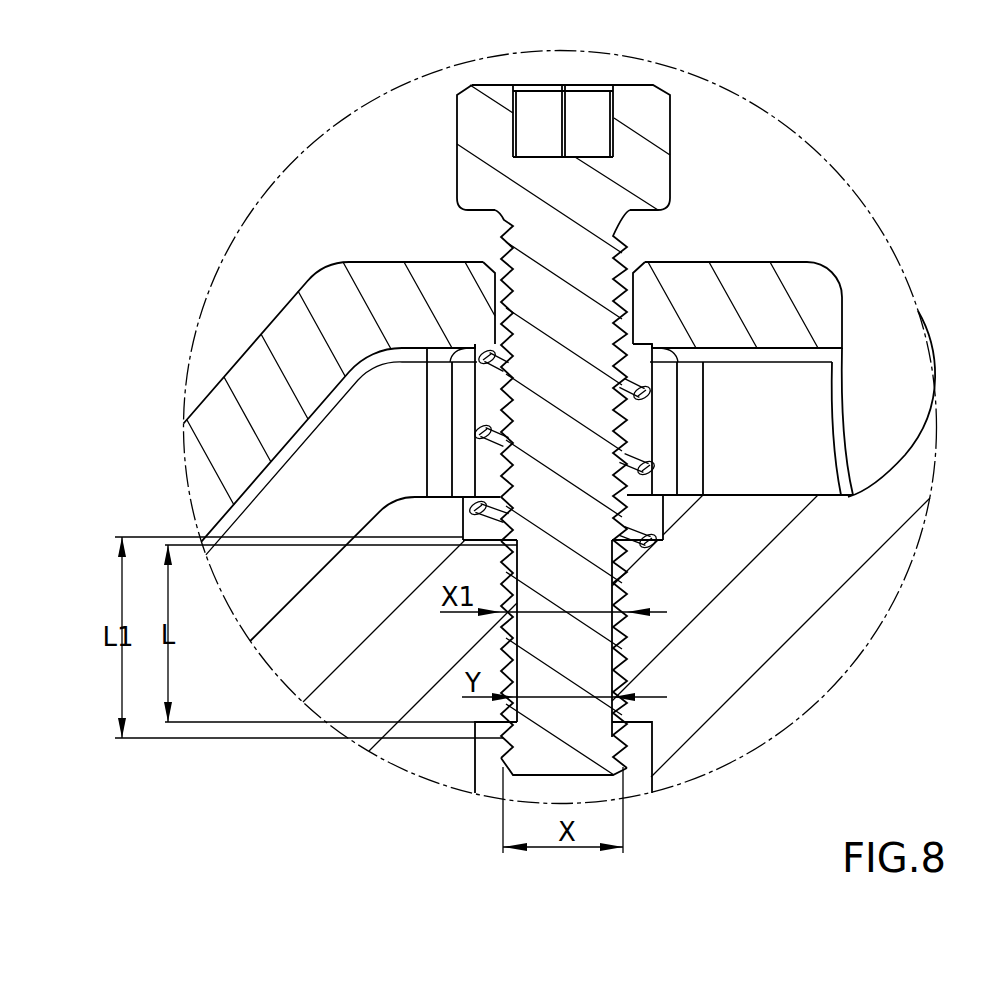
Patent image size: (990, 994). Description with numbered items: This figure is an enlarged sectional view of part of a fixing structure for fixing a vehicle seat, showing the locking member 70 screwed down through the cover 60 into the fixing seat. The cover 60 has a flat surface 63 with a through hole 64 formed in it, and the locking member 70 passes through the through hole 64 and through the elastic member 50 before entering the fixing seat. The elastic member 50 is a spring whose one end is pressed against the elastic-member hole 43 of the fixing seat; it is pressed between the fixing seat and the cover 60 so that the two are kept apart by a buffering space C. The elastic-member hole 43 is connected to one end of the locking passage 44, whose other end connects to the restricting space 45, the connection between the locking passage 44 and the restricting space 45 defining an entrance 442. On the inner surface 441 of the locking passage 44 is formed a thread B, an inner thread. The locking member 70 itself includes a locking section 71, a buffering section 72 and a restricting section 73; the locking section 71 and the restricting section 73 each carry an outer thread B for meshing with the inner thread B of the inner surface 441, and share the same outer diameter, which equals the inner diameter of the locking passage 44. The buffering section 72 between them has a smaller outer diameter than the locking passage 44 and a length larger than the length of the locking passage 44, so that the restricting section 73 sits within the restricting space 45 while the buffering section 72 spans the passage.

The locking member 70 is at (647, 170).
The locking section 71 is at (520, 228).
The buffering section 72 is at (513, 645).
The restricting section 73 is at (500, 745).
The cover 60 is at (822, 257).
The flat surface 63 is at (757, 273).
The through hole 64 is at (640, 262).
The elastic-member hole 43 is at (657, 515).
The elastic member 50 is at (480, 432).
The locking passage 44 is at (630, 560).
The inner surface 441 is at (672, 560).
The entrance 442 is at (620, 638).
The restricting space 45 is at (487, 773).
The thread B is at (500, 407).
The buffering space C is at (810, 441).